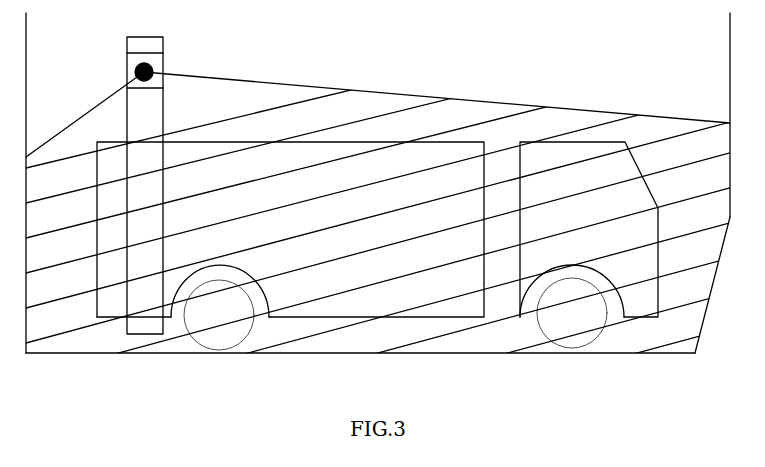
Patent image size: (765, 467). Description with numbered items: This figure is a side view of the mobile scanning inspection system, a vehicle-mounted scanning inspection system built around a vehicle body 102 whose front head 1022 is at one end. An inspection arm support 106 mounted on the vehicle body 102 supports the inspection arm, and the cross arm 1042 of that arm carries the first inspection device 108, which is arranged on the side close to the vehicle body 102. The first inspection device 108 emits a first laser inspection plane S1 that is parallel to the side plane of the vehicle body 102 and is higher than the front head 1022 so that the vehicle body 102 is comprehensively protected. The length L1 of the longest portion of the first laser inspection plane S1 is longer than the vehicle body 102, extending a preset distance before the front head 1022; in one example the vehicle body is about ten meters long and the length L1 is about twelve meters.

The length of the longest portion of the first laser inspection plane L1 is at (38, 28).
The first laser inspection plane S1 is at (380, 108).
The vehicle body 102 is at (338, 157).
The front head 1022 is at (585, 155).
The inspection arm support 106 is at (145, 173).
The first inspection device 108 is at (152, 62).
The cross arm 1042 is at (132, 67).